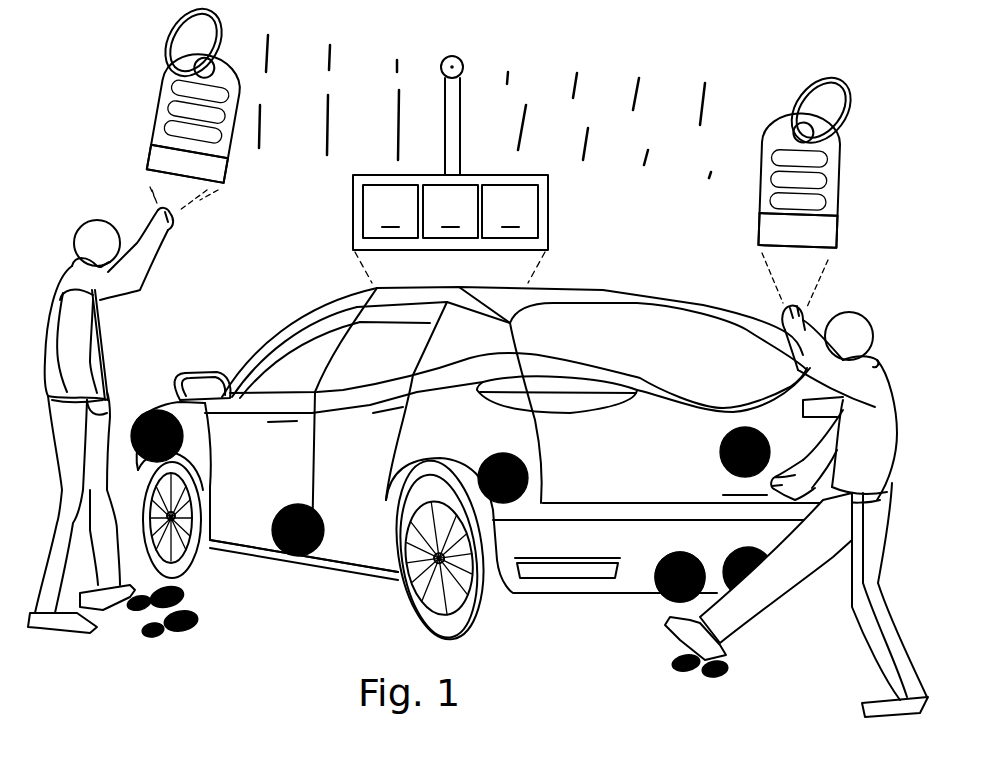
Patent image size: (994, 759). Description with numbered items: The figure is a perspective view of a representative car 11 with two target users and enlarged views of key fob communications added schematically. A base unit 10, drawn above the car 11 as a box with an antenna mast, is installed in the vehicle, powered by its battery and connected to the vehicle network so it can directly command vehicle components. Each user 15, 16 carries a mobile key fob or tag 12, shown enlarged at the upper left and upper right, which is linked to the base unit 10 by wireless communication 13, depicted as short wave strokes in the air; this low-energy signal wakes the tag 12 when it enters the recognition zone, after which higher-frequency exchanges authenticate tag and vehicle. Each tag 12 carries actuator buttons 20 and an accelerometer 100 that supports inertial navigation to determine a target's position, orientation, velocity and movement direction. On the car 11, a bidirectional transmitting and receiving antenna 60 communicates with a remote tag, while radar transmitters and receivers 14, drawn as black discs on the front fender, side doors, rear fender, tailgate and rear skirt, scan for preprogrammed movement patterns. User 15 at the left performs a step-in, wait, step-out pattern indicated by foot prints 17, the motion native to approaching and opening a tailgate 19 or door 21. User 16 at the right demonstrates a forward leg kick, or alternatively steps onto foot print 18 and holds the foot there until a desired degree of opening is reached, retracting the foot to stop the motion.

The base unit 10 is at (548, 204).
The car 11 is at (277, 268).
The key fob or tag 12 is at (225, 77).
The wireless communication 13 is at (270, 47).
The radar transmitters and receivers 14 is at (148, 410).
The user 15 is at (95, 327).
The user 16 is at (733, 632).
The step pattern (foot prints) 17 is at (190, 587).
The foot print 18 is at (673, 660).
The tailgate 19 is at (613, 490).
The actuator button 20 is at (165, 100).
The door 21 is at (241, 513).
The bidirectional transmitting and receiving antenna 60 is at (663, 562).
The accelerometer 100 is at (158, 155).